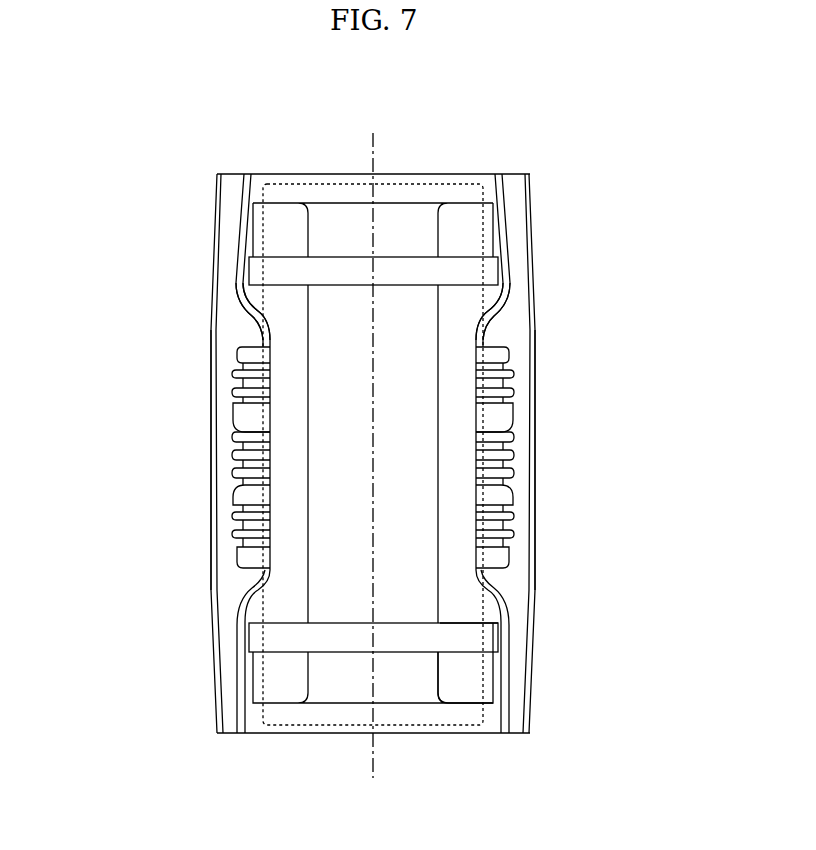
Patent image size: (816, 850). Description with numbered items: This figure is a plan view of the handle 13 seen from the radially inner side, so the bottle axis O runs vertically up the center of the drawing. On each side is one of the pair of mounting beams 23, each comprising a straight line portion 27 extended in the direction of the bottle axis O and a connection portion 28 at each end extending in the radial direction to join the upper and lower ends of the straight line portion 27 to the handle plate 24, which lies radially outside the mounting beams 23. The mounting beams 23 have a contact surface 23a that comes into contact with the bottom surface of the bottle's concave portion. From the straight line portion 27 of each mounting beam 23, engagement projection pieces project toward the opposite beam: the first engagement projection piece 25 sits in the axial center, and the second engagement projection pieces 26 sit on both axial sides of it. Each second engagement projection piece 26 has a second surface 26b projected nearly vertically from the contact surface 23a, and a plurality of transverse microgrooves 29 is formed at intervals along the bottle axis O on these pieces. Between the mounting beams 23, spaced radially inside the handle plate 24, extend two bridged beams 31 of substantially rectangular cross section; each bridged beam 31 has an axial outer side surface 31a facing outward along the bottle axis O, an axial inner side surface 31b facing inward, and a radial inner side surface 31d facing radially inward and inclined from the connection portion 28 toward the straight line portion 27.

The bottle axis O is at (372, 150).
The handle 13 is at (608, 131).
The mounting beam 23 is at (78, 220).
The contact surface 23a is at (226, 335).
The handle plate 24 is at (447, 241).
The first engagement projection piece 25 is at (245, 413).
The second engagement projection piece 26 is at (245, 320).
The second surface of second engagement projection piece 26b is at (247, 366).
The straight line portion 27 is at (205, 407).
The connection portion 28 is at (205, 217).
The transverse microgrooves 29 is at (275, 357).
The bridged beam 31 is at (407, 250).
The axial outer side surface 31a is at (478, 614).
The axial inner side surface 31b is at (457, 658).
The radial inner side surface 31d is at (485, 638).